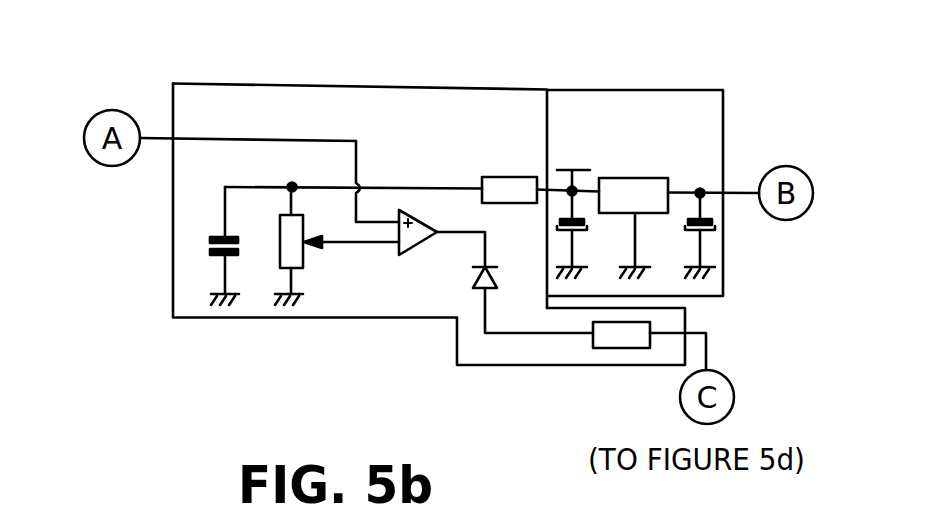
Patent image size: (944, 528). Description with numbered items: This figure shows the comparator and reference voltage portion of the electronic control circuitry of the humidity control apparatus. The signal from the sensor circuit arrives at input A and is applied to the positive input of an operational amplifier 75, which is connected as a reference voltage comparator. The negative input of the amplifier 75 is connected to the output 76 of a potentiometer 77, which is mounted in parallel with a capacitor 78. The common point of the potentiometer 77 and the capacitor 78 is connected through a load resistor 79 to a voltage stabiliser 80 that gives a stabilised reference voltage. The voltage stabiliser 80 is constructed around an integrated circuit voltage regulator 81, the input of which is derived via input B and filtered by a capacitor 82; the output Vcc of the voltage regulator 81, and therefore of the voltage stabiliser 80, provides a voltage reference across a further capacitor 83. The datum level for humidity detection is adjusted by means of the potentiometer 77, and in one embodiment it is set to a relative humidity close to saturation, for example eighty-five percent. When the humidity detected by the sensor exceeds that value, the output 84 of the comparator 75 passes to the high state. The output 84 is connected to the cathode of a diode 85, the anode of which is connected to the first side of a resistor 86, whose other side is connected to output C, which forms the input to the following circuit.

The operational amplifier 75 is at (426, 218).
The output of potentiometer 76 is at (328, 243).
The potentiometer 77 is at (278, 237).
The capacitor 78 is at (211, 238).
The load resistor 79 is at (518, 177).
The voltage stabiliser 80 is at (605, 90).
The integrated circuit voltage regulator 81 is at (643, 178).
The capacitor 82 is at (683, 232).
The further capacitor 83 is at (577, 232).
The output of comparator 84 is at (467, 232).
The diode 85 is at (498, 279).
The resistor 86 is at (622, 337).